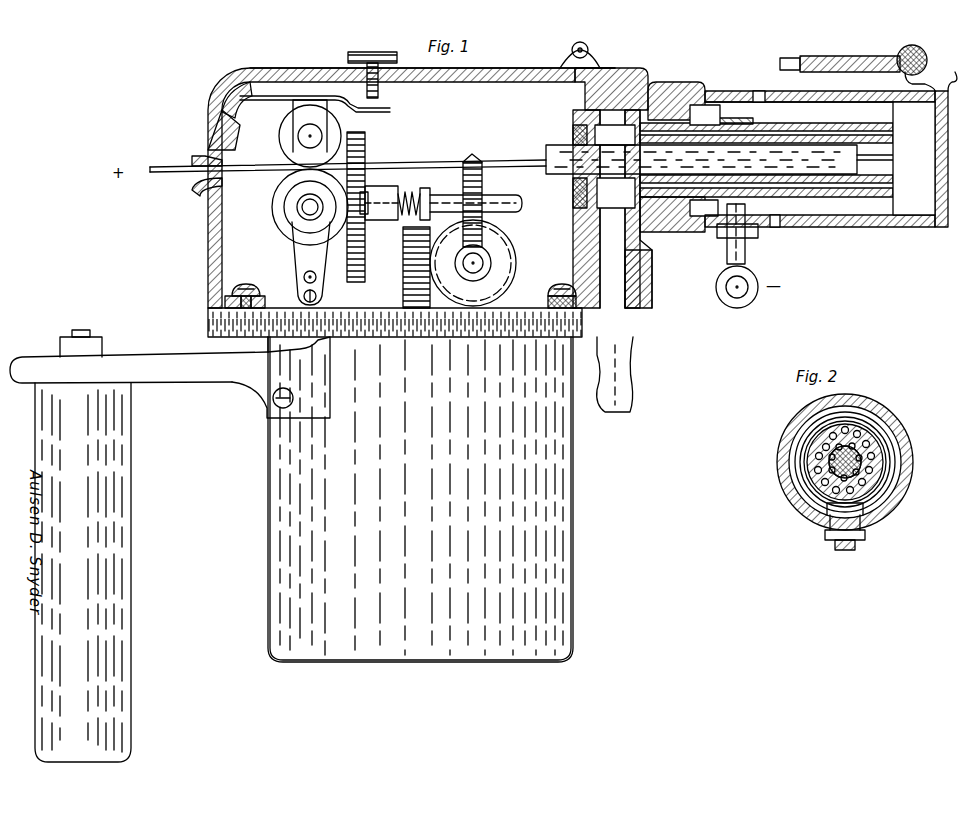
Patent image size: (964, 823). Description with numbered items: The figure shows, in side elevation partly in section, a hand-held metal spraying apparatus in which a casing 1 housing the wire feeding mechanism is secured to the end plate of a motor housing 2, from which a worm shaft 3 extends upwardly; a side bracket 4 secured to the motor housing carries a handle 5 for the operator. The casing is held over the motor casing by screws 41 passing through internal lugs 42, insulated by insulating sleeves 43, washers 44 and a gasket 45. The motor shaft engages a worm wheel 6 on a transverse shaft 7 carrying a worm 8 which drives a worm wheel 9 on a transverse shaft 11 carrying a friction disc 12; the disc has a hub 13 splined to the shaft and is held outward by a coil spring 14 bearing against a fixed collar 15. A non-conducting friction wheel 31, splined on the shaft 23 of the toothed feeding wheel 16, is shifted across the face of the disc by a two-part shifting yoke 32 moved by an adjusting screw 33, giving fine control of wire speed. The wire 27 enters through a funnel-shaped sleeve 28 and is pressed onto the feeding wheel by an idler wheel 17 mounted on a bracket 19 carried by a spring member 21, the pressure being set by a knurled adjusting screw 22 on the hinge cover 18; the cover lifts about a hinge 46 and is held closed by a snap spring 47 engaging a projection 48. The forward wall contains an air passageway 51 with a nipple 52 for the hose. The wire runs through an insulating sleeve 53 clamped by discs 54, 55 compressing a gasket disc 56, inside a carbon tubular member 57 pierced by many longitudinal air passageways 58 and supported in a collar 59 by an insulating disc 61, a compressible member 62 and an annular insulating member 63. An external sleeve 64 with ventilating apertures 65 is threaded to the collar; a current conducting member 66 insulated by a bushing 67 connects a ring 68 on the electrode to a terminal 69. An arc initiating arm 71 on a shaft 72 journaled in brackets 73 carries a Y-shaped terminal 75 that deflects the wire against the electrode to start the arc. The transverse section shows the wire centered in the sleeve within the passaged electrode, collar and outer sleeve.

In FIG. 1, the casing 1 is at (212, 250).
In FIG. 1, the motor housing 2 is at (268, 512).
In FIG. 1, the worm shaft 3 is at (403, 284).
In FIG. 1, the side bracket 4 is at (190, 352).
In FIG. 1, the handle 5 is at (35, 450).
In FIG. 1, the worm wheel 6 is at (515, 254).
In FIG. 1, the transverse shaft 7 is at (484, 265).
In FIG. 1, the worm 8 is at (486, 254).
In FIG. 1, the worm wheel 9 is at (482, 182).
In FIG. 1, the transverse shaft 11 is at (506, 196).
In FIG. 1, the friction disc 12 is at (360, 250).
In FIG. 1, the hub 13 is at (380, 188).
In FIG. 1, the coil spring 14 is at (406, 192).
In FIG. 1, the fixed collar 15 is at (430, 196).
In FIG. 1, the feeding wheel 16 is at (274, 196).
In FIG. 1, the idler wheel 17 is at (282, 150).
In FIG. 1, the hinge cover 18 is at (262, 70).
In FIG. 1, the bracket 19 is at (318, 114).
In FIG. 1, the spring member 21 is at (388, 108).
In FIG. 1, the adjusting screw 22 is at (368, 54).
In FIG. 1, the shaft 23 is at (302, 210).
In FIG. 1, the wire 27 is at (172, 168).
In FIG. 2, the wire 27 is at (860, 465).
In FIG. 1, the funnel-shaped sleeve 28 is at (196, 190).
In FIG. 1, the friction wheel 31 is at (284, 207).
In FIG. 1, the shifting yoke 32 is at (296, 260).
In FIG. 1, the adjusting screw 33 is at (316, 277).
In FIG. 1, the screws 41 is at (256, 286).
In FIG. 1, the internal lugs 42 is at (264, 302).
In FIG. 1, the insulating sleeves 43 is at (552, 300).
In FIG. 1, the washers 44 is at (252, 296).
In FIG. 1, the gasket 45 is at (328, 312).
In FIG. 1, the hinge 46 is at (588, 46).
In FIG. 1, the snap spring 47 is at (226, 146).
In FIG. 1, the projection 48 is at (212, 146).
In FIG. 1, the passageway 51 is at (630, 268).
In FIG. 1, the nipple 52 is at (632, 376).
In FIG. 1, the sleeve 53 is at (550, 152).
In FIG. 2, the sleeve 53 is at (832, 452).
In FIG. 1, the clamping disc 54 is at (615, 135).
In FIG. 1, the clamping disc 55 is at (573, 200).
In FIG. 1, the disc 56 is at (578, 136).
In FIG. 1, the tubular member 57 is at (800, 124).
In FIG. 2, the tubular member 57 is at (878, 434).
In FIG. 1, the air passageways 58 is at (893, 138).
In FIG. 2, the air passageways 58 is at (888, 440).
In FIG. 1, the collar 59 is at (678, 84).
In FIG. 1, the insulating disc 61 is at (705, 116).
In FIG. 1, the compressible member 62 is at (704, 209).
In FIG. 1, the annular insulating member 63 is at (616, 193).
In FIG. 1, the external sleeve 64 is at (738, 88).
In FIG. 2, the external sleeve 64 is at (905, 494).
In FIG. 1, the ventilating apertures 65 is at (758, 92).
In FIG. 1, the current conducting member 66 is at (746, 250).
In FIG. 2, the current conducting member 66 is at (855, 548).
In FIG. 1, the bushing 67 is at (752, 236).
In FIG. 2, the bushing 67 is at (865, 535).
In FIG. 1, the ring 68 is at (753, 121).
In FIG. 2, the ring 68 is at (860, 420).
In FIG. 1, the terminal 69 is at (718, 296).
In FIG. 1, the arc initiating arm 71 is at (856, 56).
In FIG. 1, the shaft 72 is at (926, 58).
In FIG. 1, the brackets 73 is at (930, 78).
In FIG. 1, the Y-shaped terminal 75 is at (788, 58).